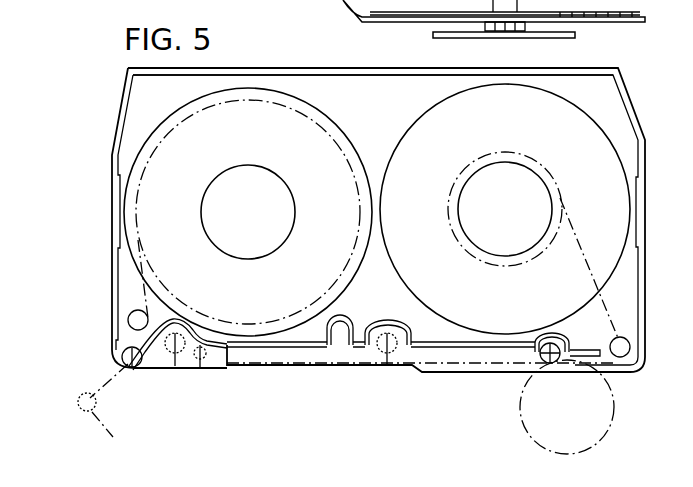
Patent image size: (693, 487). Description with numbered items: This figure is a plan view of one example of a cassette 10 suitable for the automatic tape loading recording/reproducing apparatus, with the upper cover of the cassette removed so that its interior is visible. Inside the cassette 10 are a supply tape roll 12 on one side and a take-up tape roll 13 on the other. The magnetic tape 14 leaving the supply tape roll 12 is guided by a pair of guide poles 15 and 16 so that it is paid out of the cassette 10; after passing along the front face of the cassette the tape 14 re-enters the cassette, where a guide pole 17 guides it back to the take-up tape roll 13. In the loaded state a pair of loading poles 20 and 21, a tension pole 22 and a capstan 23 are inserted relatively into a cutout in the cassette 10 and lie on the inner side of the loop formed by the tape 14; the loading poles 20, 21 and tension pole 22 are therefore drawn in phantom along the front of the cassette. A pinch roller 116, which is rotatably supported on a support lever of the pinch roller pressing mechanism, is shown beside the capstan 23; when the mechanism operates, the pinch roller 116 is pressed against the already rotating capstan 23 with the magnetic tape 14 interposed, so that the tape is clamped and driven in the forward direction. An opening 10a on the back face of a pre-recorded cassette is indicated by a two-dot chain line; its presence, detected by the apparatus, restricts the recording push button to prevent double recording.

The cassette 10 is at (643, 112).
The opening 10a is at (580, 72).
The supply tape roll 12 is at (302, 98).
The take-up tape roll 13 is at (480, 156).
The magnetic tape 14 is at (328, 366).
The guide pole 15 is at (128, 320).
The guide pole 16 is at (132, 367).
The guide pole 17 is at (632, 350).
The loading pole 20 is at (176, 368).
The loading pole 21 is at (389, 358).
The tension pole 22 is at (205, 372).
The capstan 23 is at (548, 342).
The pinch roller 116 is at (611, 421).